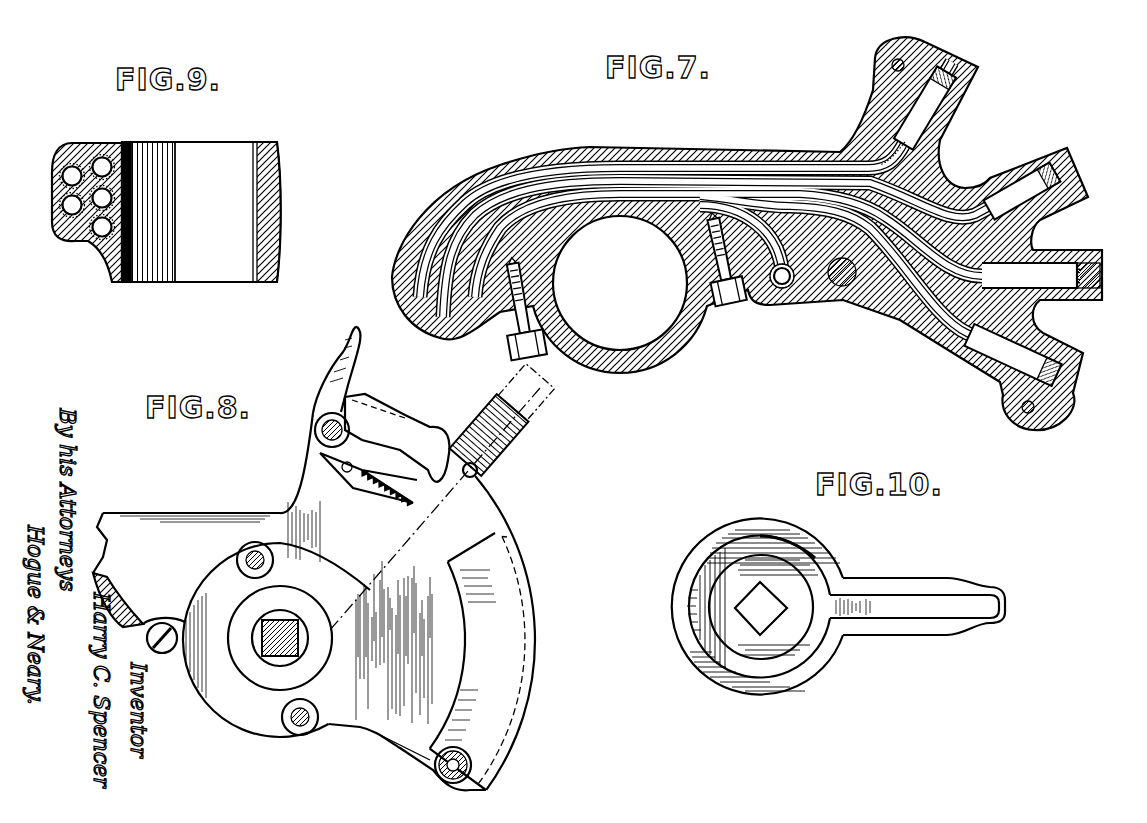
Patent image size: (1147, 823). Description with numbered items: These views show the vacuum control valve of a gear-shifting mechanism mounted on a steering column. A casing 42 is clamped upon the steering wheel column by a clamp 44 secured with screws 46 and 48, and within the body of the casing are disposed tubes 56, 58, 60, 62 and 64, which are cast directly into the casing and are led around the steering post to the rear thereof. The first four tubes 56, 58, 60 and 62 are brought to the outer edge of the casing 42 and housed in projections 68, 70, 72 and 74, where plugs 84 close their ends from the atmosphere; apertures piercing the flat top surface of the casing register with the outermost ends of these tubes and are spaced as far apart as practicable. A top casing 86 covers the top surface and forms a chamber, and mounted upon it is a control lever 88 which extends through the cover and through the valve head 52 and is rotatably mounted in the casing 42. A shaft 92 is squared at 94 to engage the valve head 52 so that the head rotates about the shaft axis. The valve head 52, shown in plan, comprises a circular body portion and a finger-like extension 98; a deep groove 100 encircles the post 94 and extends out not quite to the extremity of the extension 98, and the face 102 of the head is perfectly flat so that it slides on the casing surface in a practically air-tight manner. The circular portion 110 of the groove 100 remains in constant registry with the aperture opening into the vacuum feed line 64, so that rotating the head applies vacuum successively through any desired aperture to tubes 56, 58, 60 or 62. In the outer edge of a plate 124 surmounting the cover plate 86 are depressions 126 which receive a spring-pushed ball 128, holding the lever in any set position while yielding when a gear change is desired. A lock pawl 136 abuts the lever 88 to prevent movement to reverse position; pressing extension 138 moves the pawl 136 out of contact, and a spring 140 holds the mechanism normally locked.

In FIG. 9, the casing 42 is at (60, 233).
In FIG. 8, the casing 42 is at (143, 523).
In FIG. 9, the clamp 44 is at (277, 203).
In FIG. 7, the clamp 44 is at (648, 365).
In FIG. 7, the screw 46 is at (548, 350).
In FIG. 7, the screw 48 is at (732, 304).
In FIG. 10, the valve head 52 is at (742, 563).
In FIG. 9, the tube 56 is at (68, 163).
In FIG. 7, the tube 56 is at (922, 137).
In FIG. 9, the tube 58 is at (102, 166).
In FIG. 7, the tube 58 is at (978, 200).
In FIG. 9, the tube 60 is at (72, 205).
In FIG. 7, the tube 60 is at (1040, 228).
In FIG. 9, the tube 62 is at (63, 220).
In FIG. 7, the tube 62 is at (983, 373).
In FIG. 9, the vacuum feed line 64 is at (90, 227).
In FIG. 7, the vacuum feed line 64 is at (790, 288).
In FIG. 7, the projection 68 is at (963, 84).
In FIG. 7, the projection 70 is at (1030, 172).
In FIG. 7, the projection 72 is at (1050, 262).
In FIG. 7, the projection 74 is at (1050, 358).
In FIG. 7, the plug 84 is at (940, 62).
In FIG. 8, the top casing 86 is at (383, 733).
In FIG. 8, the control lever 88 is at (520, 437).
In FIG. 10, the shaft 92 is at (752, 523).
In FIG. 8, the squared post 94 is at (263, 660).
In FIG. 10, the finger-like extension 98 is at (913, 580).
In FIG. 10, the deep groove 100 is at (893, 607).
In FIG. 10, the face of the valve head 102 is at (813, 547).
In FIG. 10, the circular portion of groove 110 is at (690, 600).
In FIG. 8, the plate 124 is at (520, 682).
In FIG. 8, the depression 126 is at (510, 532).
In FIG. 8, the ball 128 is at (477, 473).
In FIG. 8, the lock pawl 136 is at (393, 432).
In FIG. 8, the extension 138 is at (349, 357).
In FIG. 8, the spring 140 is at (353, 488).